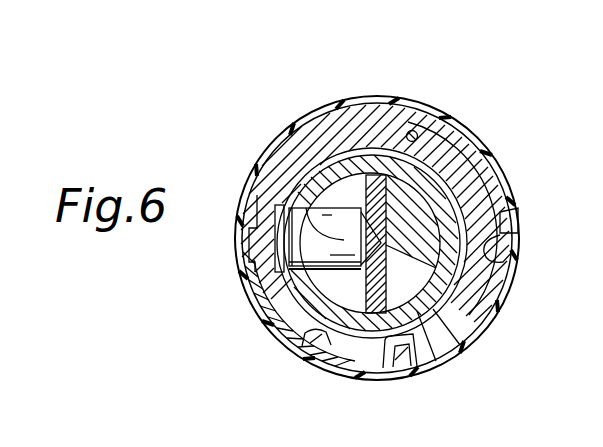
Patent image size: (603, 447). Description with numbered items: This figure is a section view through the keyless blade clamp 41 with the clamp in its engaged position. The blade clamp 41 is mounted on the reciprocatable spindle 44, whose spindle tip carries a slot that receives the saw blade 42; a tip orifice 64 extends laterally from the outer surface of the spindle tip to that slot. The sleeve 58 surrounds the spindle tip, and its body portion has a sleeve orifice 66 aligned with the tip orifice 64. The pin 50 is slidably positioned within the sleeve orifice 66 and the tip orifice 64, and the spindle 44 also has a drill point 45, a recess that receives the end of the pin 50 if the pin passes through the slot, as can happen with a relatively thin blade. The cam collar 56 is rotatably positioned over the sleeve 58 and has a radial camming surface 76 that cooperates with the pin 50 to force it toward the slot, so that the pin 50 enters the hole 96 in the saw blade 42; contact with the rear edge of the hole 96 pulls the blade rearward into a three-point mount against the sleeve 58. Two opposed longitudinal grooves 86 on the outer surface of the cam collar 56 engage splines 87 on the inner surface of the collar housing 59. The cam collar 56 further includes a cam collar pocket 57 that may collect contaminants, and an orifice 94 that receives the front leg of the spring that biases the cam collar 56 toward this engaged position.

The keyless blade clamp 41 is at (491, 113).
The saw blade 42 is at (440, 366).
The spindle 44 is at (452, 165).
The drill point 45 is at (446, 279).
The pin 50 is at (263, 291).
The cam collar 56 is at (478, 310).
The cam collar pocket 57 is at (519, 214).
The sleeve 58 is at (452, 127).
The collar housing 59 is at (272, 323).
The tip orifice 64 is at (249, 262).
The sleeve orifice 66 is at (275, 243).
The radial camming surface 76 is at (318, 353).
The longitudinal grooves 86 is at (492, 253).
The splines 87 is at (508, 240).
The orifice 94 is at (418, 131).
The hole 96 is at (470, 190).